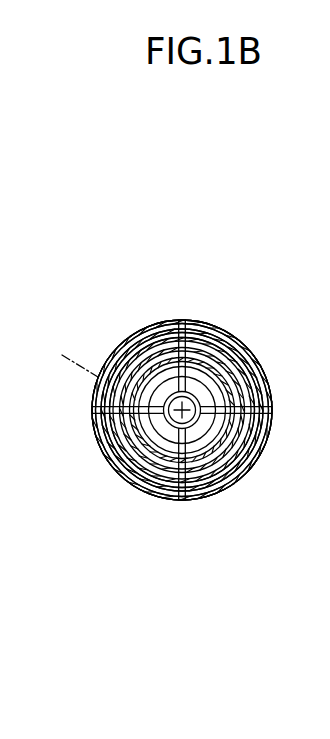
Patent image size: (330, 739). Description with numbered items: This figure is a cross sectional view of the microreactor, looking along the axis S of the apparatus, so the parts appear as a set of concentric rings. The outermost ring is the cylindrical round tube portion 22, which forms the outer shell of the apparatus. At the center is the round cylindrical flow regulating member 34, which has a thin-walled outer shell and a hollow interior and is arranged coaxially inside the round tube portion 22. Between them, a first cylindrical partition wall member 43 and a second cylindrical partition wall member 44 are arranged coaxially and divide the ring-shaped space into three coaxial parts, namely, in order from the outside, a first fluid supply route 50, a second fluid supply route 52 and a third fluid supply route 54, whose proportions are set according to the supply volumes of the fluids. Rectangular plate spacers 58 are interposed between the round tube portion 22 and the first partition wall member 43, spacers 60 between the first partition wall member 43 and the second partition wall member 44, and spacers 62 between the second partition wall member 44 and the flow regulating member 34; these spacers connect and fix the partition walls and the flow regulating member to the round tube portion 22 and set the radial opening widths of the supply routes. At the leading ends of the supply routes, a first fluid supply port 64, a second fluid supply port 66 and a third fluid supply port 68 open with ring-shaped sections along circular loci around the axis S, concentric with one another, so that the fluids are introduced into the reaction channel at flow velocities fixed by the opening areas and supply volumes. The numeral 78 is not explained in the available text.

The round tube portion 22 is at (112, 356).
The axis S is at (70, 360).
The spacers 58 is at (92, 388).
The second fluid supply port 66 is at (112, 468).
The first fluid supply port 64 is at (140, 490).
The flow regulating member 34 is at (228, 337).
The third fluid supply port 68 is at (103, 437).
The third fluid supply route 54 is at (152, 335).
The first fluid supply route 50 is at (167, 492).
The first cylindrical partition wall member 43 is at (237, 353).
The ring 78 is at (192, 490).
The spacers 60 is at (170, 338).
The second fluid supply route 52 is at (235, 463).
The spacers 62 is at (243, 400).
The second cylindrical partition wall member 44 is at (204, 352).